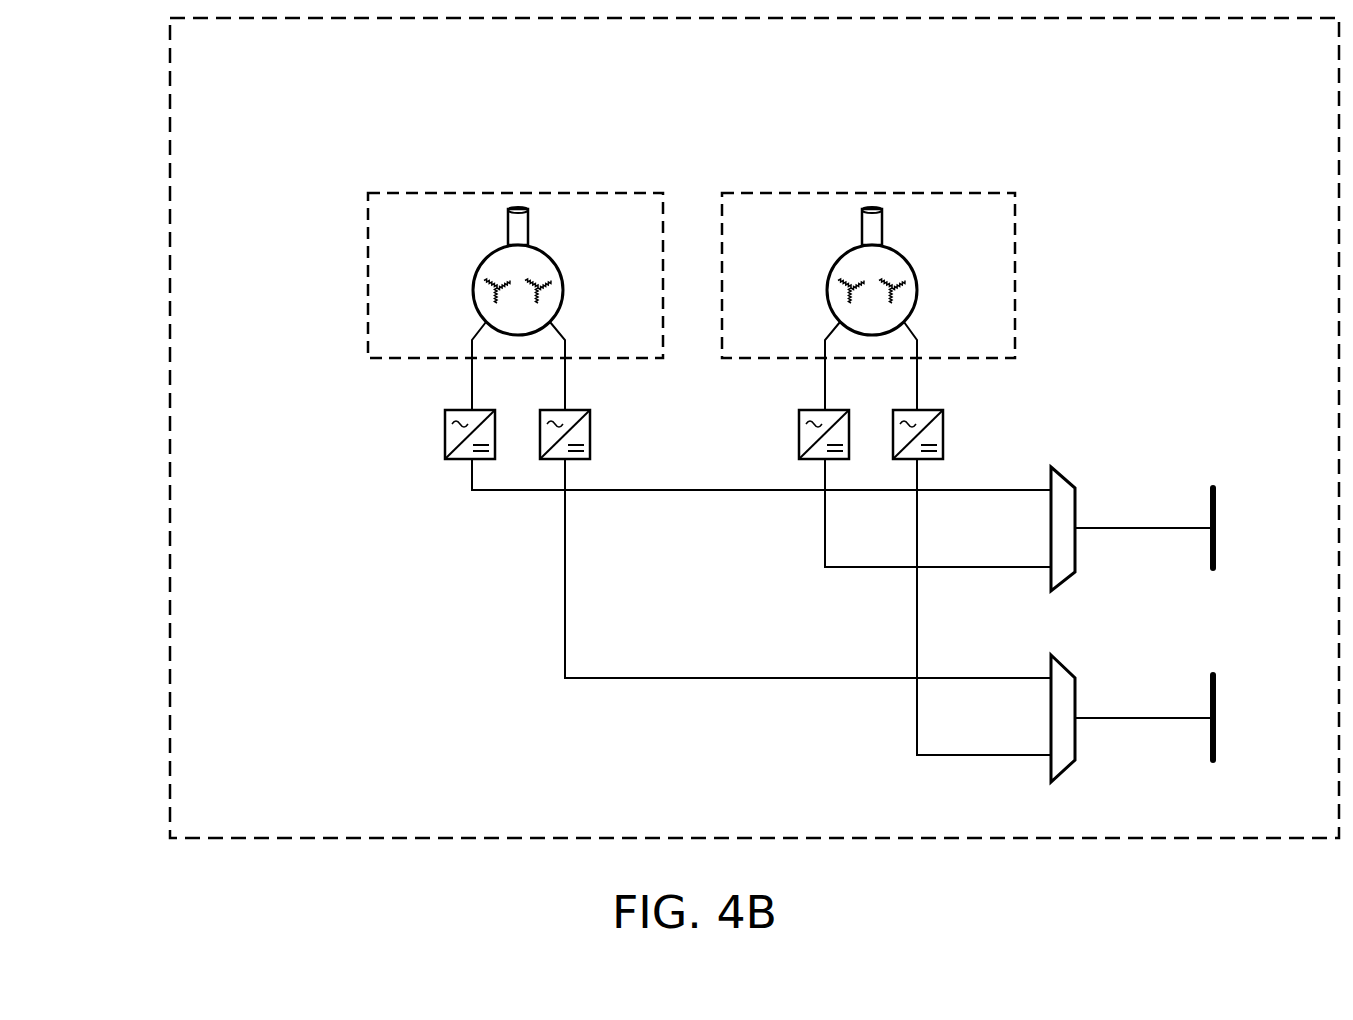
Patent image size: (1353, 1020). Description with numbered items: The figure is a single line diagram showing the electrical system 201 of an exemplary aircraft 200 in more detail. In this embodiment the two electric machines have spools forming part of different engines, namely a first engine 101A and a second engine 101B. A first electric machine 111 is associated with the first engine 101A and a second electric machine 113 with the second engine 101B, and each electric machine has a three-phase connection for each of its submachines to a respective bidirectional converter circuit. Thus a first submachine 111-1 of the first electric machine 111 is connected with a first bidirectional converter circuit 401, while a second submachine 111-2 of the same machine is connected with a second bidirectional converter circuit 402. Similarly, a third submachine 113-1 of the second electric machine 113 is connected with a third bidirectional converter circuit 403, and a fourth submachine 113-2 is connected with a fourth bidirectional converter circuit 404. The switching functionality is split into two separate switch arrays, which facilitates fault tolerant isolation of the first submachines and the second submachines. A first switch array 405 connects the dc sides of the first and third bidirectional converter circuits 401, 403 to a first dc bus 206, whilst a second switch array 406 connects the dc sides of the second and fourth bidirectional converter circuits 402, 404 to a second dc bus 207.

The aircraft 200 is at (124, 77).
The electrical system 201 is at (322, 102).
The first engine 101A is at (368, 247).
The second engine 101B is at (1015, 218).
The first electric machine 111 is at (473, 298).
The first submachine 111-1 is at (491, 264).
The second submachine 111-2 is at (544, 264).
The second electric machine 113 is at (917, 296).
The third submachine 113-1 is at (835, 297).
The fourth submachine 113-2 is at (898, 268).
The first bidirectional converter circuit 401 is at (447, 410).
The second bidirectional converter circuit 402 is at (542, 410).
The third bidirectional converter circuit 403 is at (801, 410).
The fourth bidirectional converter circuit 404 is at (895, 410).
The first switch array 405 is at (1060, 473).
The second switch array 406 is at (1060, 663).
The first dc bus 206 is at (1215, 568).
The second dc bus 207 is at (1215, 760).